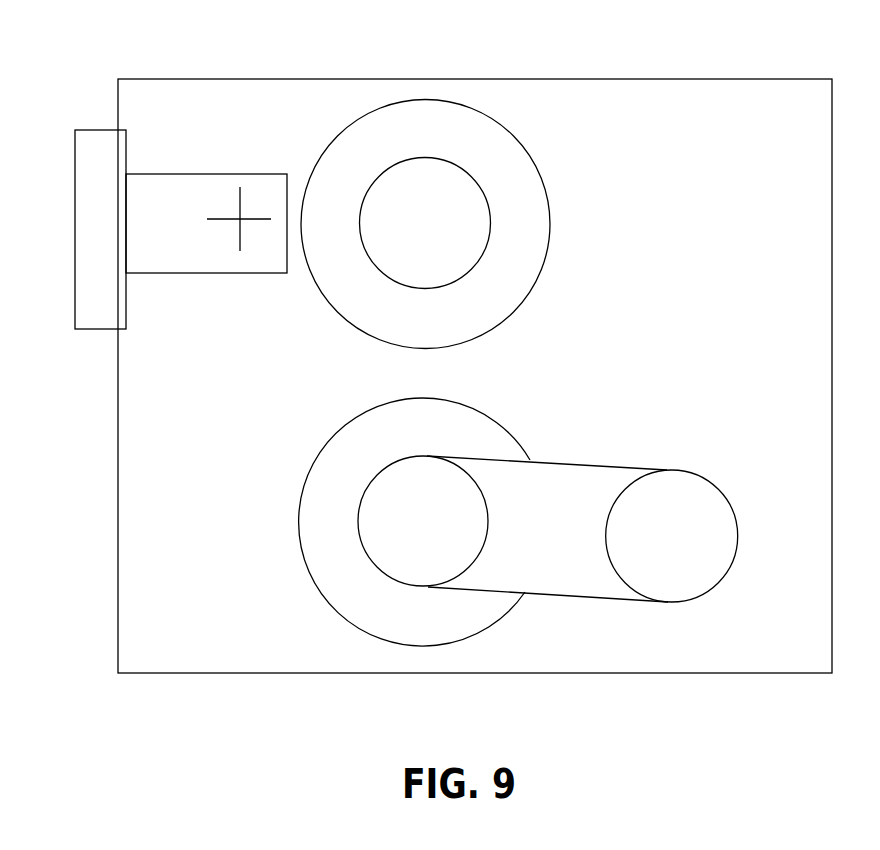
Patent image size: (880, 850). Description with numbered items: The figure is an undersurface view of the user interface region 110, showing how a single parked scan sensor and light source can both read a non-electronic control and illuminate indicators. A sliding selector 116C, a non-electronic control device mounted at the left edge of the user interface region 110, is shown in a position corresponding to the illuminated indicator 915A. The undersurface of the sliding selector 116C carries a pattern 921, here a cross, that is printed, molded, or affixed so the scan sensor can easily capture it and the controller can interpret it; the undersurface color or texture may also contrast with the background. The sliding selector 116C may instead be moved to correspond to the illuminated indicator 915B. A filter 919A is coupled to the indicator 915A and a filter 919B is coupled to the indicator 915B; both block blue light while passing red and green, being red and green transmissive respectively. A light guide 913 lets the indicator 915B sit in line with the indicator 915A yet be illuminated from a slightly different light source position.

The user interface region 110 is at (180, 79).
The sliding selector 116C is at (77, 129).
The pattern 921 is at (241, 187).
The illuminated indicator 915A is at (320, 158).
The filter 919A is at (491, 208).
The illuminated indicator 915B is at (478, 409).
The filter 919B is at (395, 458).
The light guide 913 is at (592, 463).